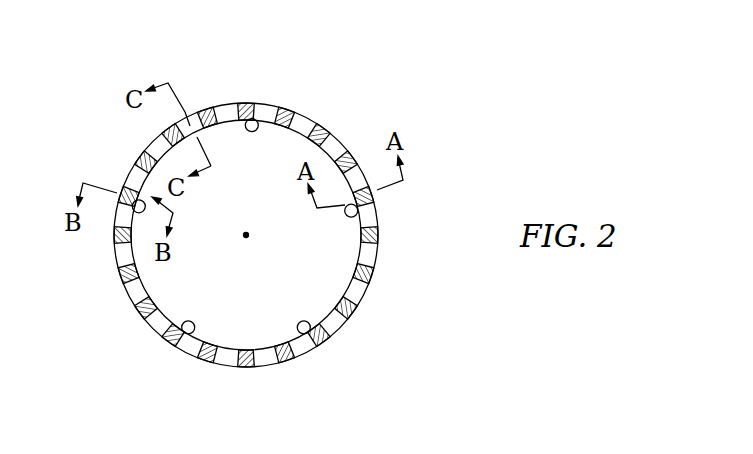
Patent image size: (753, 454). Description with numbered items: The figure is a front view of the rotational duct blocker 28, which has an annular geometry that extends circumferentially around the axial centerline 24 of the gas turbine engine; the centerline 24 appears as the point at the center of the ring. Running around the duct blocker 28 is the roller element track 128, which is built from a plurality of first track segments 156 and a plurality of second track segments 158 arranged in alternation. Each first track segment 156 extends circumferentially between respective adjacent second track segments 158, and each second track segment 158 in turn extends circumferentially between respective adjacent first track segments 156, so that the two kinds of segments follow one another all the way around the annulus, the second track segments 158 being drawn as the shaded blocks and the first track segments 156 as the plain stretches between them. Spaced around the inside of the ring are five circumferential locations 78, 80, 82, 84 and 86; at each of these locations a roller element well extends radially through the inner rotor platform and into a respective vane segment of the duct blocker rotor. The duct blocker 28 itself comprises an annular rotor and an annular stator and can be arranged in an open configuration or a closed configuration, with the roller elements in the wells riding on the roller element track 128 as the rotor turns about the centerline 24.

The duct blocker 28 is at (439, 125).
The second track segments 158 is at (332, 151).
The axial centerline 24 is at (247, 235).
The circumferential location 78 is at (256, 120).
The circumferential location 80 is at (357, 212).
The circumferential location 82 is at (304, 334).
The circumferential location 84 is at (189, 334).
The circumferential location 86 is at (135, 209).
The roller element track 128 is at (219, 139).
The first track segments 156 is at (340, 214).